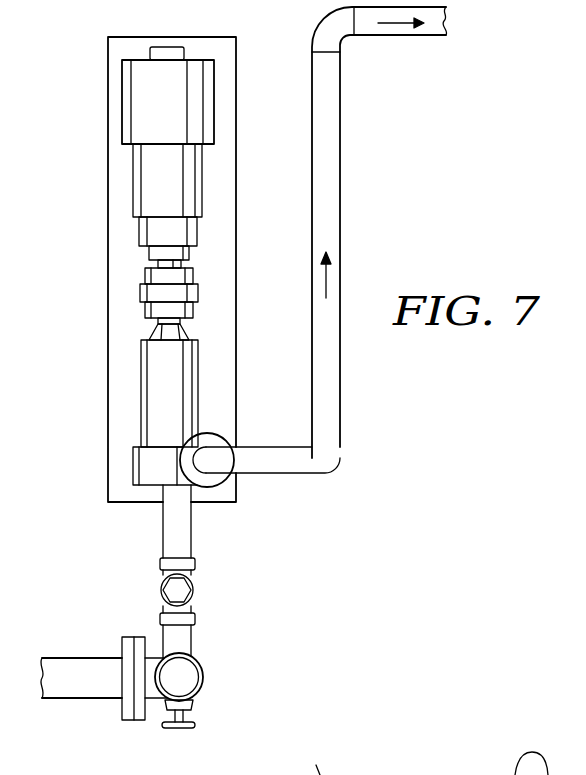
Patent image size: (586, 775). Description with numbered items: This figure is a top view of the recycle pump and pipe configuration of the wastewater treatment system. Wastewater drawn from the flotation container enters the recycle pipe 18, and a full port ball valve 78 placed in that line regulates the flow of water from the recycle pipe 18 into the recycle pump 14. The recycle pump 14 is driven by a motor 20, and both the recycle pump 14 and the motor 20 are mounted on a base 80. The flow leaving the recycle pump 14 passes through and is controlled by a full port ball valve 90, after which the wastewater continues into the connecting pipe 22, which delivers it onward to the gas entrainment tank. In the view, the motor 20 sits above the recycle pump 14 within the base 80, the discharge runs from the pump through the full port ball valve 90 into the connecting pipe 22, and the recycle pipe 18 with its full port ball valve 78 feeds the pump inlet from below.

The recycle pump 14 is at (142, 393).
The recycle pipe 18 is at (149, 702).
The motor 20 is at (125, 113).
The connecting pipe 22 is at (340, 222).
The full port ball valve 78 is at (193, 592).
The base 80 is at (120, 248).
The full port ball valve 90 is at (232, 480).